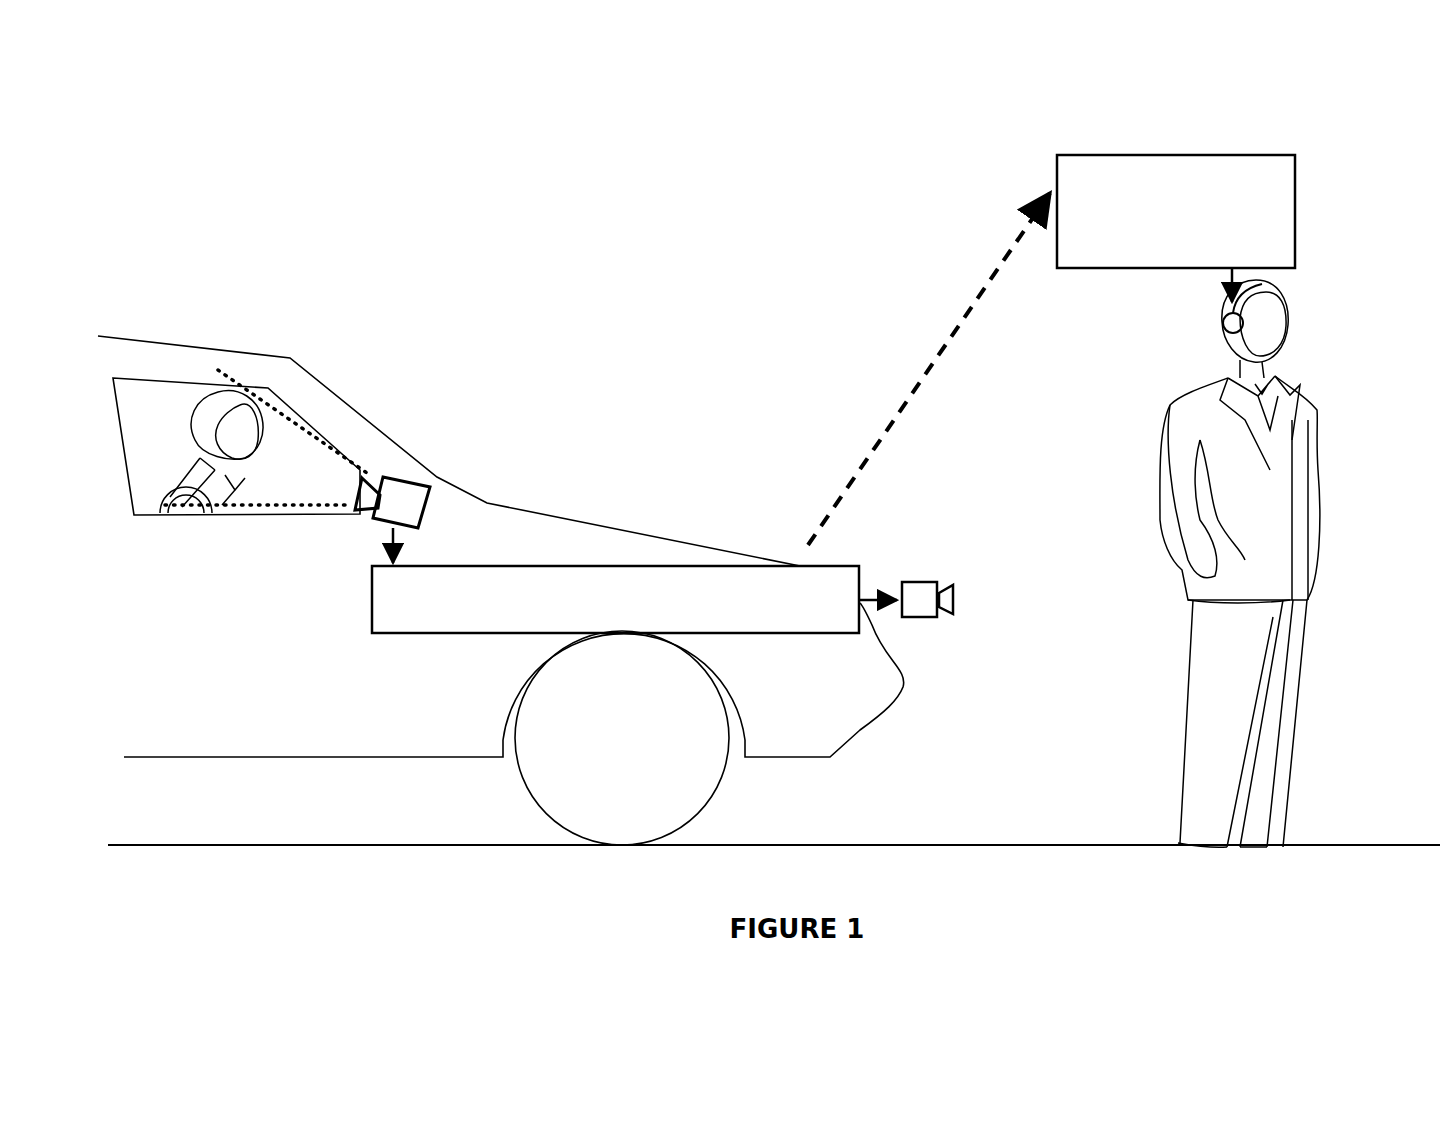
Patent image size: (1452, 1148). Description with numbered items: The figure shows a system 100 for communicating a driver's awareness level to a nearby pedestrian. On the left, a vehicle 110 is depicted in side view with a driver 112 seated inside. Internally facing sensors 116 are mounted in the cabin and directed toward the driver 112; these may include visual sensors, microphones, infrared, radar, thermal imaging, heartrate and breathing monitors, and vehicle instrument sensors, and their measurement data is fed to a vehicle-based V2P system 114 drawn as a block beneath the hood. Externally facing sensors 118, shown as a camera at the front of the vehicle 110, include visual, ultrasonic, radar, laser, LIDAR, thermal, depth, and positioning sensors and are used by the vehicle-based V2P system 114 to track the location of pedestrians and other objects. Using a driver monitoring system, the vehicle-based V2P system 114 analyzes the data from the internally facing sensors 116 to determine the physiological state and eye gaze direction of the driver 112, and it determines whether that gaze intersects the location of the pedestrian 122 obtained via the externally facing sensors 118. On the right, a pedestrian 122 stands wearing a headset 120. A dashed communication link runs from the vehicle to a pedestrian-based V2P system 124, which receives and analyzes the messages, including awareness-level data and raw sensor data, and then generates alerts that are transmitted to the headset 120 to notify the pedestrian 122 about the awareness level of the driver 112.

The system 100 is at (638, 120).
The vehicle 110 is at (244, 350).
The driver 112 is at (207, 392).
The vehicle-based V2P system 114 is at (615, 599).
The internally facing sensors 116 is at (408, 480).
The externally facing sensors 118 is at (921, 618).
The headset 120 is at (1223, 329).
The pedestrian 122 is at (1167, 463).
The pedestrian-based V2P system 124 is at (1176, 211).